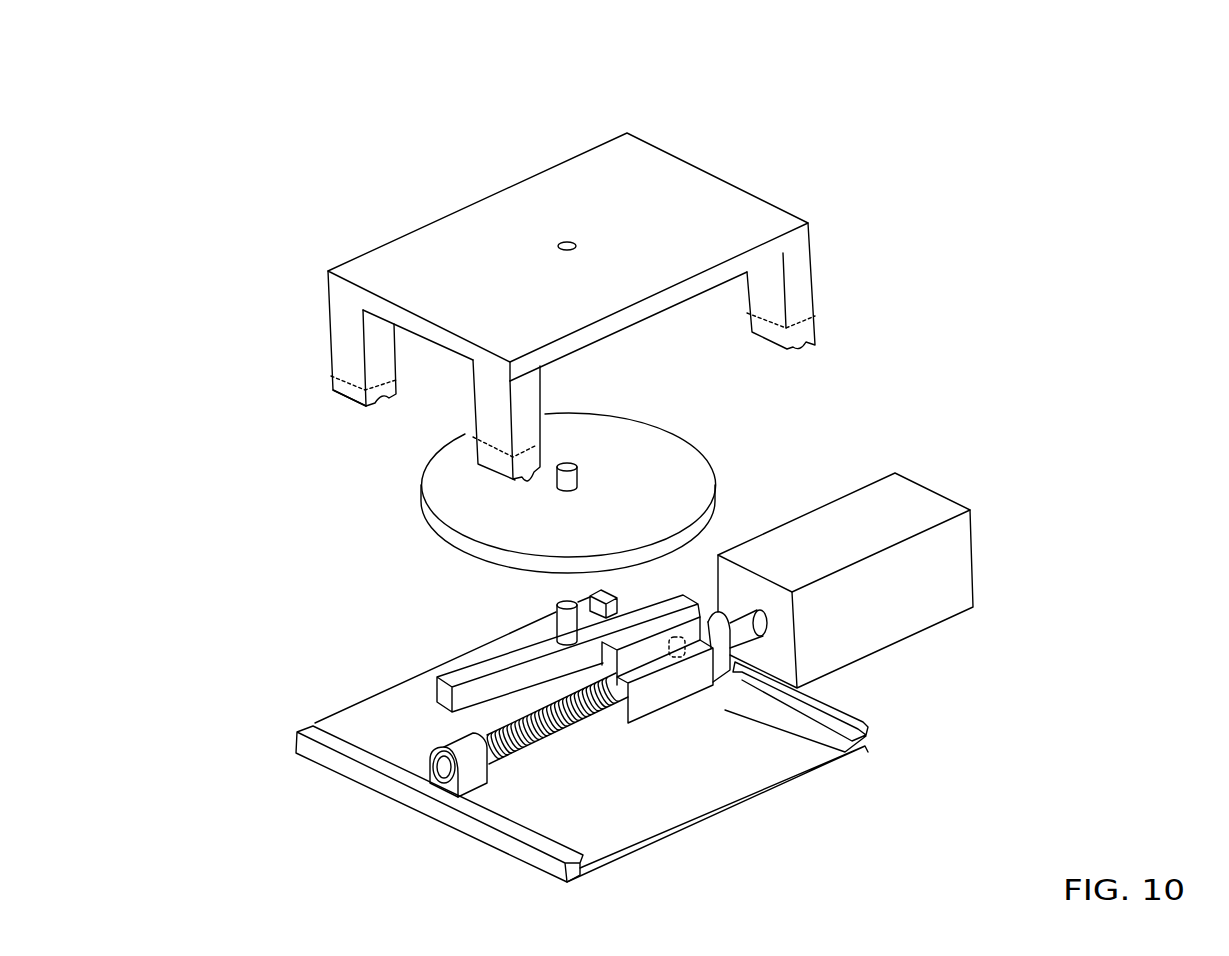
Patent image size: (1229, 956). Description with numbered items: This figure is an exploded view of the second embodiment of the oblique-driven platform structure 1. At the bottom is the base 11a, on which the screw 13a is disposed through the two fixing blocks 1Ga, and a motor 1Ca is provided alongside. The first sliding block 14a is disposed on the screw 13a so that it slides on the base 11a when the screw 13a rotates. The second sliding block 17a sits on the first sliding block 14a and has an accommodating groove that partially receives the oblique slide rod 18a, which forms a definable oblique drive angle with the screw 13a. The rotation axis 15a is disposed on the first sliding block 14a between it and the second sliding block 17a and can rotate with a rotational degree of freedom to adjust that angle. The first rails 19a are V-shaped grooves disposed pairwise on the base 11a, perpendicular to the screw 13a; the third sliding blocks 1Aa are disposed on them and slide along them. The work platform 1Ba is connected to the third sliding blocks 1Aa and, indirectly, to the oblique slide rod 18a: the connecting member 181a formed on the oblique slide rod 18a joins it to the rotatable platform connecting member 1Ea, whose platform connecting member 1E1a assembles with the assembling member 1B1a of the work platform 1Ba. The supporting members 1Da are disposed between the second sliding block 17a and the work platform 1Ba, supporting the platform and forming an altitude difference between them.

The oblique-driven platform structure 1 is at (216, 92).
The work platform 1Ba is at (635, 143).
The assembling member 1B1a is at (566, 240).
The supporting member 1Da is at (337, 338).
The third sliding block 1Aa is at (331, 381).
The platform connecting member 1Ea is at (699, 466).
The platform connecting member 1E1a is at (565, 465).
The motor 1Ca is at (920, 498).
The rotation axis 15a is at (685, 647).
The fixing block 1Ga is at (720, 623).
The oblique slide rod 18a is at (460, 673).
The connecting member 181a is at (563, 620).
The second sliding block 17a is at (637, 665).
The first sliding block 14a is at (670, 698).
The screw 13a is at (537, 740).
The base 11a is at (757, 785).
The first rail 19a is at (328, 737).